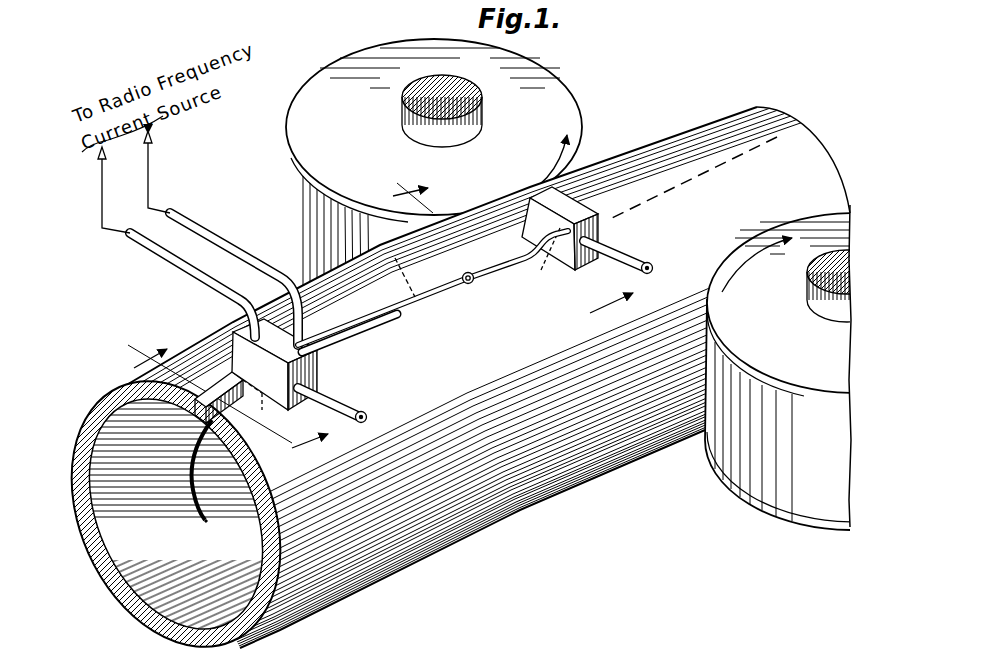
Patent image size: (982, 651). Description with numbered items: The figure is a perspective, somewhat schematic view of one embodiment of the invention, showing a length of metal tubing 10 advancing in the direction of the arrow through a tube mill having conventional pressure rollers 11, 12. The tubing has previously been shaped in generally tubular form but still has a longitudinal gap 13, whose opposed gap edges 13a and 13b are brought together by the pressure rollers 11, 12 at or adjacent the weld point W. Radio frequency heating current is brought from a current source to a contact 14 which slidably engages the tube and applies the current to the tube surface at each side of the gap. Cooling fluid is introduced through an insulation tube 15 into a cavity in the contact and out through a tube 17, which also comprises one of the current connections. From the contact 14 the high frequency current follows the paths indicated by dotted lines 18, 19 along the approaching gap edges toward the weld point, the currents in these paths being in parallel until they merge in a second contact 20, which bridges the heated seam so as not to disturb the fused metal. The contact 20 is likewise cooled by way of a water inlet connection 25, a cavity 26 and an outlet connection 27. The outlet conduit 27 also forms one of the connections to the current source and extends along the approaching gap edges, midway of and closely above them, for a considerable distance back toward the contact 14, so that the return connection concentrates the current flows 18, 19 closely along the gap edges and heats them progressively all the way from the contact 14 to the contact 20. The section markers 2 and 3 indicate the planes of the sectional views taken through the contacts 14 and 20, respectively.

The metal tubing 10 is at (520, 511).
The pressure roller 11 is at (756, 496).
The pressure roller 12 is at (318, 108).
The longitudinal gap 13 is at (218, 432).
The gap edge 13a is at (188, 402).
The gap edge 13b is at (226, 517).
The contact 14 is at (241, 347).
The insulation tube 15 is at (333, 396).
The tube 17 is at (150, 250).
The current path 18 is at (433, 316).
The current path 19 is at (396, 260).
The second contact 20 is at (537, 217).
The water inlet connection 25 is at (628, 250).
The cavity 26 is at (556, 262).
The outlet connection 27 is at (204, 230).
The weld point W is at (797, 88).
The section line 2- 2 is at (216, 406).
The section line 3- 3 is at (513, 244).